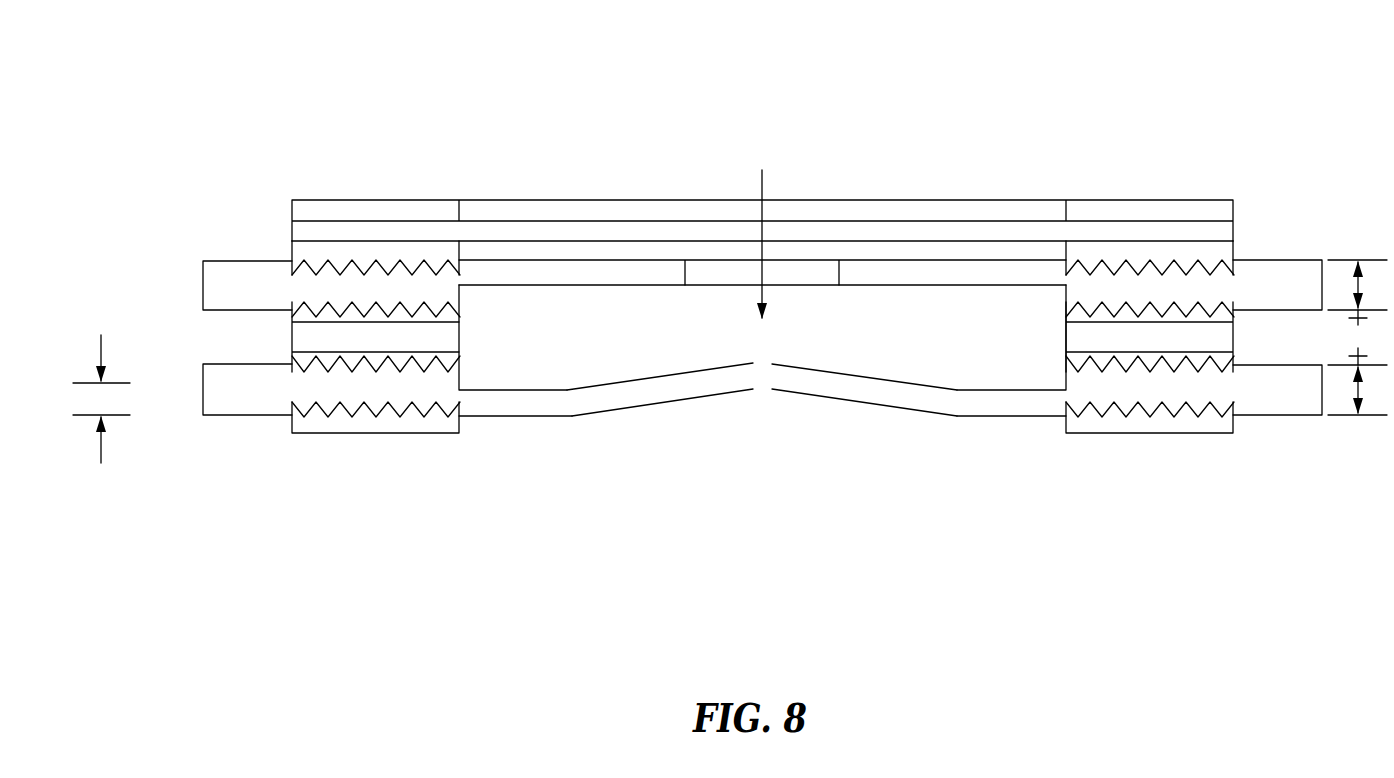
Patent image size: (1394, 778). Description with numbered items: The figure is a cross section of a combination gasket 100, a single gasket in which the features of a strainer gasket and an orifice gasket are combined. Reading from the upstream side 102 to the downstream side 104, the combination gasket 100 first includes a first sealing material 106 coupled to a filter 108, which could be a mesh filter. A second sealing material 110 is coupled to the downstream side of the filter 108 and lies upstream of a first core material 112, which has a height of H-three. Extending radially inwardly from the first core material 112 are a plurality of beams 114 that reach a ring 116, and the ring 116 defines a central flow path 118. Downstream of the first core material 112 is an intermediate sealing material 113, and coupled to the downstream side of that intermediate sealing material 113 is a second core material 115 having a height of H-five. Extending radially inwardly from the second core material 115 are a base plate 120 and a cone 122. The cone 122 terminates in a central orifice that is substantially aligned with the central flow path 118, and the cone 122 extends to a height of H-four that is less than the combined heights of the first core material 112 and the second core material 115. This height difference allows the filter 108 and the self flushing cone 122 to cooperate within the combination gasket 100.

The combination gasket 100 is at (327, 568).
The upstream side 102 is at (772, 70).
The downstream side 104 is at (800, 590).
The first sealing material 106 is at (1213, 210).
The filter 108 is at (1202, 233).
The second sealing material 110 is at (310, 250).
The first core material 112 is at (212, 293).
The intermediate sealing material 113 is at (443, 337).
The beams 114 is at (521, 272).
The second core material 115 is at (1260, 403).
The ring 116 is at (655, 272).
The central flow path 118 is at (762, 182).
The base plate 120 is at (525, 405).
The cone 122 is at (710, 382).